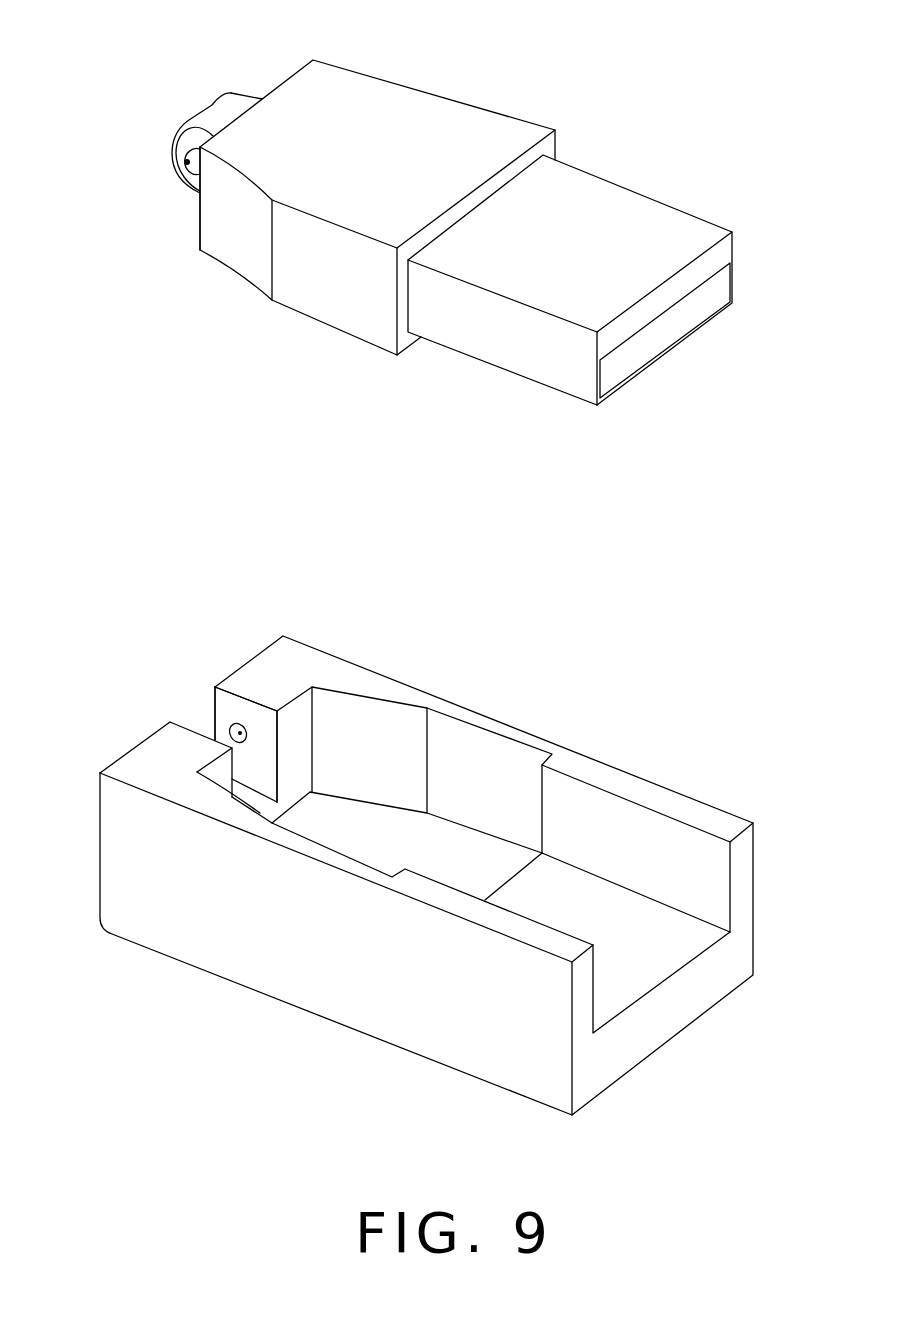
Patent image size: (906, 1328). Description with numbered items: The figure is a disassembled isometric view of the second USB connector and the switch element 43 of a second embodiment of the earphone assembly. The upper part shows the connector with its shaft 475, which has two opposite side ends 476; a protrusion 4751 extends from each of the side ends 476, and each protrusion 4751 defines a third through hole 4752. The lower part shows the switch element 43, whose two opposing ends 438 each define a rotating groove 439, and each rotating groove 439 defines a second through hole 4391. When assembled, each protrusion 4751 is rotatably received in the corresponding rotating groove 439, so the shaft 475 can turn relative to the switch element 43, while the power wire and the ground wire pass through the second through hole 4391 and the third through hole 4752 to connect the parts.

The switch element 43 is at (606, 725).
The opposing ends 438 is at (213, 700).
The rotating groove 439 is at (224, 704).
The second through hole 4391 is at (236, 732).
The shaft 475 is at (220, 110).
The protrusion 4751 is at (185, 157).
The third through hole 4752 is at (183, 165).
The side ends 476 is at (248, 90).